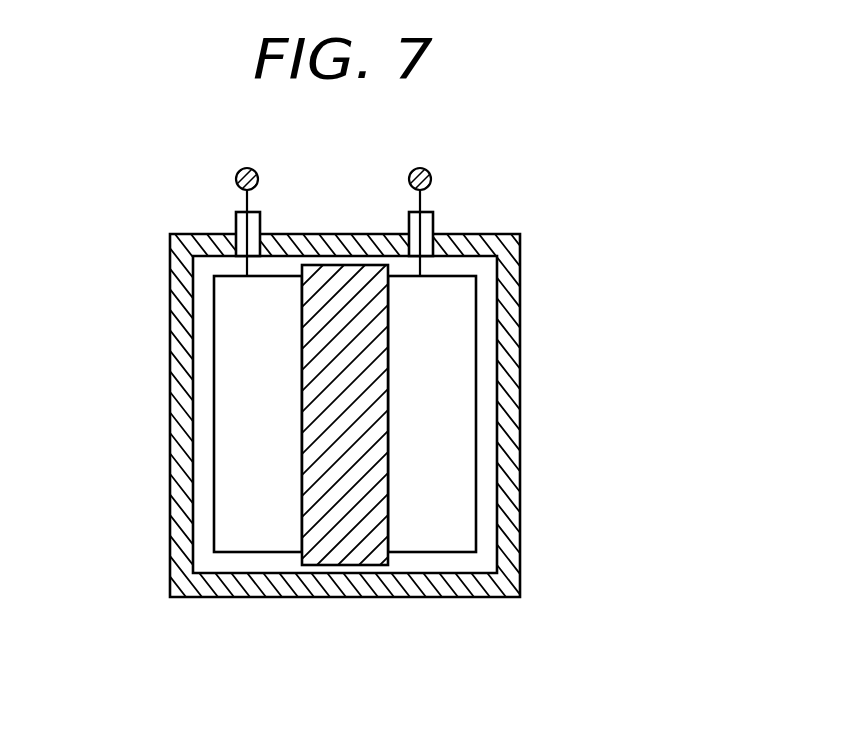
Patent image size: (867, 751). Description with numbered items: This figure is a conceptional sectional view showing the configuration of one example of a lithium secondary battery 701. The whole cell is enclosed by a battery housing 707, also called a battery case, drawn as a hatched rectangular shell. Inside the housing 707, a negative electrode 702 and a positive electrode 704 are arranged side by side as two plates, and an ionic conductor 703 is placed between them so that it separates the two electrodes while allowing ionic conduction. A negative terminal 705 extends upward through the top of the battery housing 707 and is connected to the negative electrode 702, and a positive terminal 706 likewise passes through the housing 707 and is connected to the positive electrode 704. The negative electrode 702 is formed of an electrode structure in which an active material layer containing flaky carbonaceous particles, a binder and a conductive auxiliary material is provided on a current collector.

The lithium secondary battery 701 is at (660, 617).
The negative electrode 702 is at (237, 412).
The ionic conductor 703 is at (377, 508).
The positive electrode 704 is at (460, 412).
The negative terminal 705 is at (236, 176).
The positive terminal 706 is at (432, 175).
The battery housing 707 is at (508, 307).